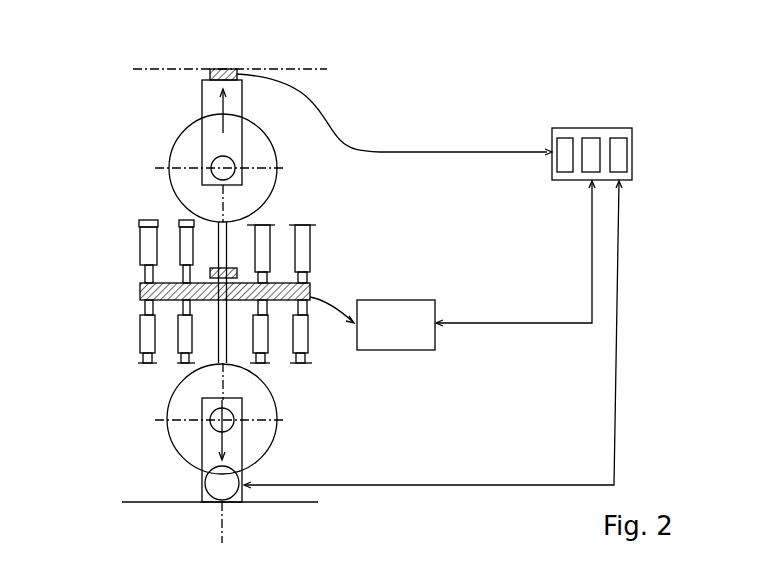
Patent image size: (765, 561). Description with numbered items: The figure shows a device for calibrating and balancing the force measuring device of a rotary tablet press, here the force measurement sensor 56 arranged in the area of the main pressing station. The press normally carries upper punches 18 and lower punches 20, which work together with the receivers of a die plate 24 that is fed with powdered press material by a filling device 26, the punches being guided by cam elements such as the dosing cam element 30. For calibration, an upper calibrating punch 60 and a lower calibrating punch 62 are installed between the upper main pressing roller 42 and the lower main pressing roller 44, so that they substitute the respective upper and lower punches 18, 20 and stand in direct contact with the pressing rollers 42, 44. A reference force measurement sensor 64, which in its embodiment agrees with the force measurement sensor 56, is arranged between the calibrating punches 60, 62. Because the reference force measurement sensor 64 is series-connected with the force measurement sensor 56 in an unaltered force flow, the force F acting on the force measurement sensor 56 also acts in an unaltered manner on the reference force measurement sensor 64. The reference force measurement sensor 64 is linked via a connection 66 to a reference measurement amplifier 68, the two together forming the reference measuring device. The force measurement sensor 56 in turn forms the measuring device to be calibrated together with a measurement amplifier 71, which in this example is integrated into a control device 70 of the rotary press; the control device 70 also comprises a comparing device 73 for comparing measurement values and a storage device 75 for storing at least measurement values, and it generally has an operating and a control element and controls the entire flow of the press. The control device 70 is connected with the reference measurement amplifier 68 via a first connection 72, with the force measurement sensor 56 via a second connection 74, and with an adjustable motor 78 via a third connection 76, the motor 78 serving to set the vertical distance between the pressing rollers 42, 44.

The upper punch 18 is at (302, 250).
The lower punch 20 is at (302, 340).
The die plate 24 is at (247, 300).
The filling device 26 is at (133, 478).
The dosing cam element 30 is at (163, 365).
The upper main pressing roller 42 is at (263, 145).
The lower main pressing roller 44 is at (267, 435).
The force measurement sensor 56 is at (227, 68).
The upper calibrating punch 60 is at (220, 245).
The lower calibrating punch 62 is at (153, 282).
The reference force measurement sensor 64 is at (162, 263).
The connection 66 is at (320, 303).
The reference measurement amplifier 68 is at (405, 337).
The control device 70 is at (594, 128).
The measurement amplifier 71 is at (565, 160).
The first connection 72 is at (518, 322).
The comparing device 73 is at (590, 150).
The second connection 74 is at (432, 152).
The storage device 75 is at (618, 147).
The third connection 76 is at (617, 380).
The adjustable motor 78 is at (228, 488).